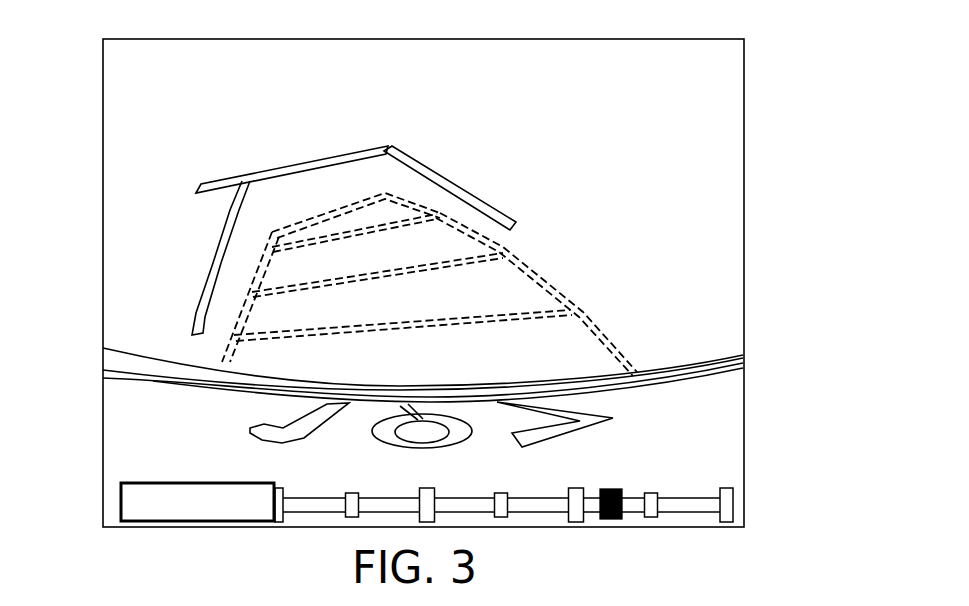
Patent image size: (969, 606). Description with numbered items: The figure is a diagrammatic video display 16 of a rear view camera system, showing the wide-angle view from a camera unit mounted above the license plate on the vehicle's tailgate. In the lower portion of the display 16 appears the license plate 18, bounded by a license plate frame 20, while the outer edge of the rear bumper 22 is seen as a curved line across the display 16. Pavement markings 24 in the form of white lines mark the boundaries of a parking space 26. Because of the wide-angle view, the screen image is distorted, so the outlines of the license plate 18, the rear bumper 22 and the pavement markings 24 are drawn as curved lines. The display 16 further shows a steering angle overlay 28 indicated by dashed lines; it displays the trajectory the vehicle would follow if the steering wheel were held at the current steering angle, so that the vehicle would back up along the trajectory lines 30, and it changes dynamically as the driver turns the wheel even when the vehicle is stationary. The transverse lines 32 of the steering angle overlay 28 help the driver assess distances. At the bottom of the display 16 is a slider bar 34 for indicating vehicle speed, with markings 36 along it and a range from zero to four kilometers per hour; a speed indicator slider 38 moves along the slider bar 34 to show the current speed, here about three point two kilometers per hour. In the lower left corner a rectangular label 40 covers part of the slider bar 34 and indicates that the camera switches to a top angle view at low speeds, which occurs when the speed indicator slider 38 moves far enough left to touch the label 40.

The video display 16 is at (710, 48).
The license plate 18 is at (149, 399).
The license plate frame 20 is at (729, 363).
The rear bumper 22 is at (694, 362).
The pavement markings 24 is at (270, 167).
The parking space 26 is at (252, 220).
The steering angle overlay 28 is at (226, 290).
The trajectory lines 30 is at (598, 322).
The transverse lines 32 is at (485, 319).
The slider bar 34 is at (688, 503).
The markings 36 is at (345, 495).
The speed indicator slider 38 is at (620, 495).
The label 40 is at (133, 487).